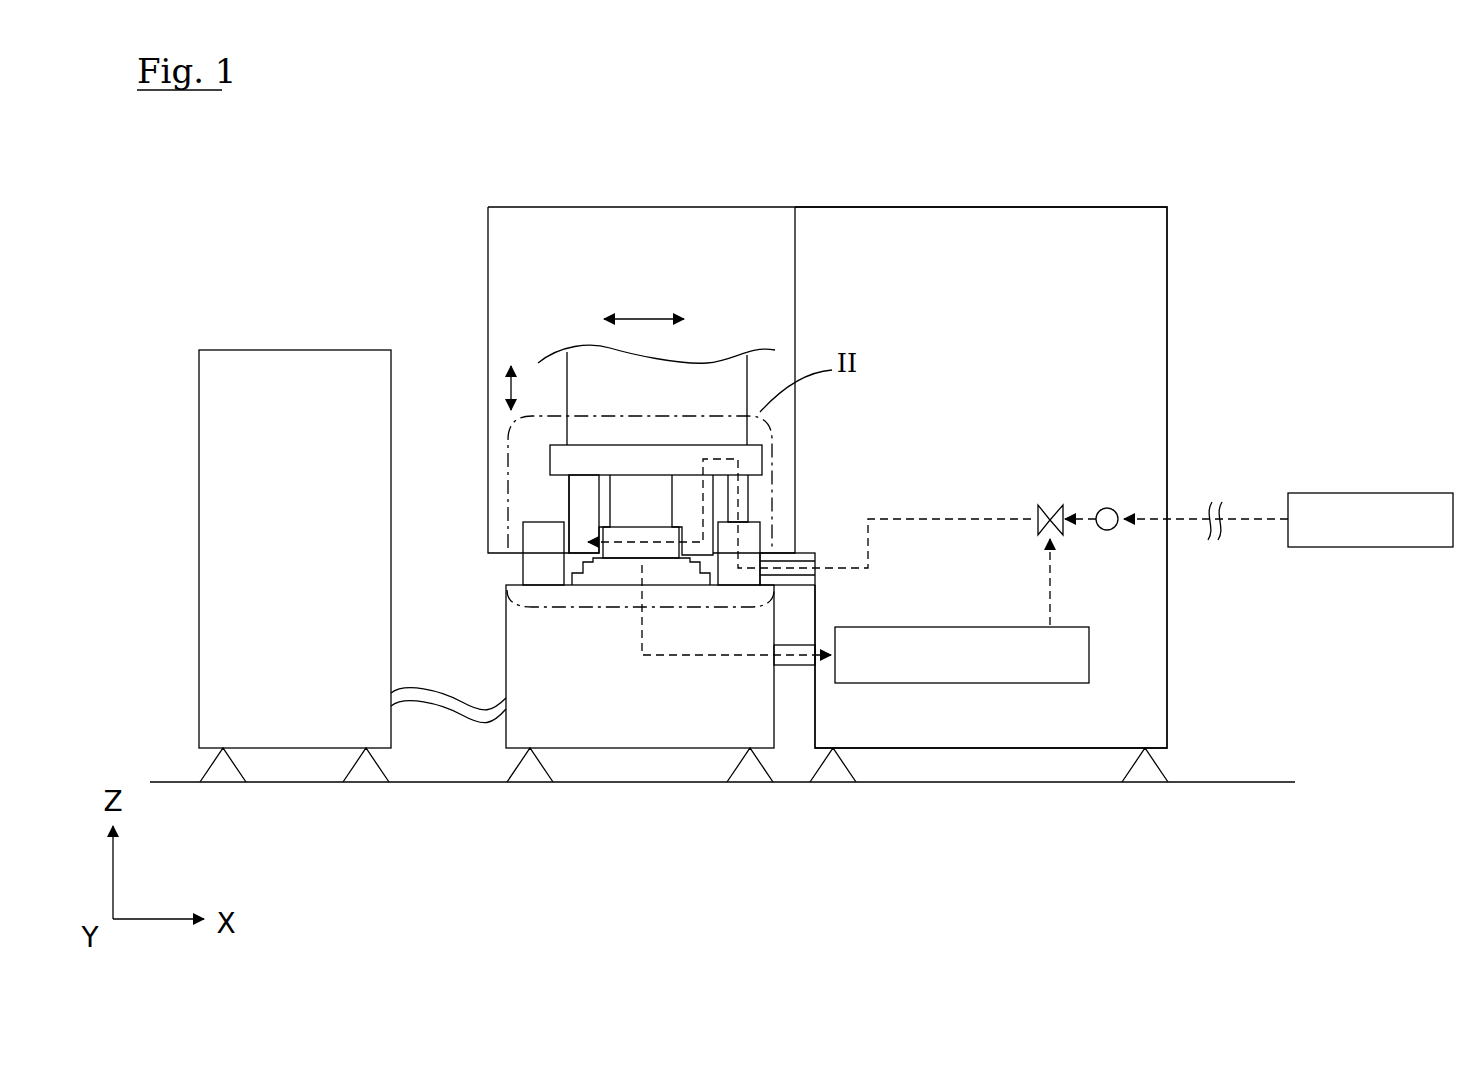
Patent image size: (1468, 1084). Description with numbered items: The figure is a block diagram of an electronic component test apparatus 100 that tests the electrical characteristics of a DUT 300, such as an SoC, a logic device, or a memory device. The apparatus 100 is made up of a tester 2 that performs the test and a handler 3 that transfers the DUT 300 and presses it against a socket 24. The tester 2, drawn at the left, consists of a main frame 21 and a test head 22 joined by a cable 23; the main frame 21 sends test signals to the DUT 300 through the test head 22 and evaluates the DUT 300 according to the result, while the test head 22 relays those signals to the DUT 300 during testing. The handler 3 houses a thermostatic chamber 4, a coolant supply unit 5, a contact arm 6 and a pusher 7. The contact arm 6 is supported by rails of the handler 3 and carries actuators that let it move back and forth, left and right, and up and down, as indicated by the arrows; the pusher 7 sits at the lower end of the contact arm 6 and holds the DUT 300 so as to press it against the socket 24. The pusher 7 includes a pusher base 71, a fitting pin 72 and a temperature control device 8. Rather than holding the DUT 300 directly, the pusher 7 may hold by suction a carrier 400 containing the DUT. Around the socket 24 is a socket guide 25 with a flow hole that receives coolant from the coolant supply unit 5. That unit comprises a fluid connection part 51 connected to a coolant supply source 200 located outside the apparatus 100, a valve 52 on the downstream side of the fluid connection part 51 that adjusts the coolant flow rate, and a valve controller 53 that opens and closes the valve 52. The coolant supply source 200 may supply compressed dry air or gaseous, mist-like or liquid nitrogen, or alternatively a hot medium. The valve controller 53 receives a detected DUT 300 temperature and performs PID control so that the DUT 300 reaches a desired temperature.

The electronic component test apparatus 100 is at (1165, 162).
The tester 2 is at (200, 335).
The main frame 21 is at (300, 360).
The test head 22 is at (668, 732).
The cable 23 is at (443, 702).
The socket 24 is at (590, 583).
The socket guide 25 is at (520, 566).
The handler 3 is at (898, 205).
The thermostatic chamber 4 is at (622, 212).
The coolant supply unit 5 is at (1100, 466).
The fluid connection part 51 is at (1107, 531).
The valve 52 is at (1052, 503).
The valve controller 53 is at (986, 684).
The contact arm 6 is at (580, 377).
The pusher 7 is at (546, 457).
The pusher base 71 is at (755, 444).
The fitting pin 72 is at (750, 488).
The temperature control device 8 is at (566, 492).
The DUT 300 is at (603, 535).
The carrier 400 is at (537, 534).
The coolant supply source 200 is at (1350, 548).